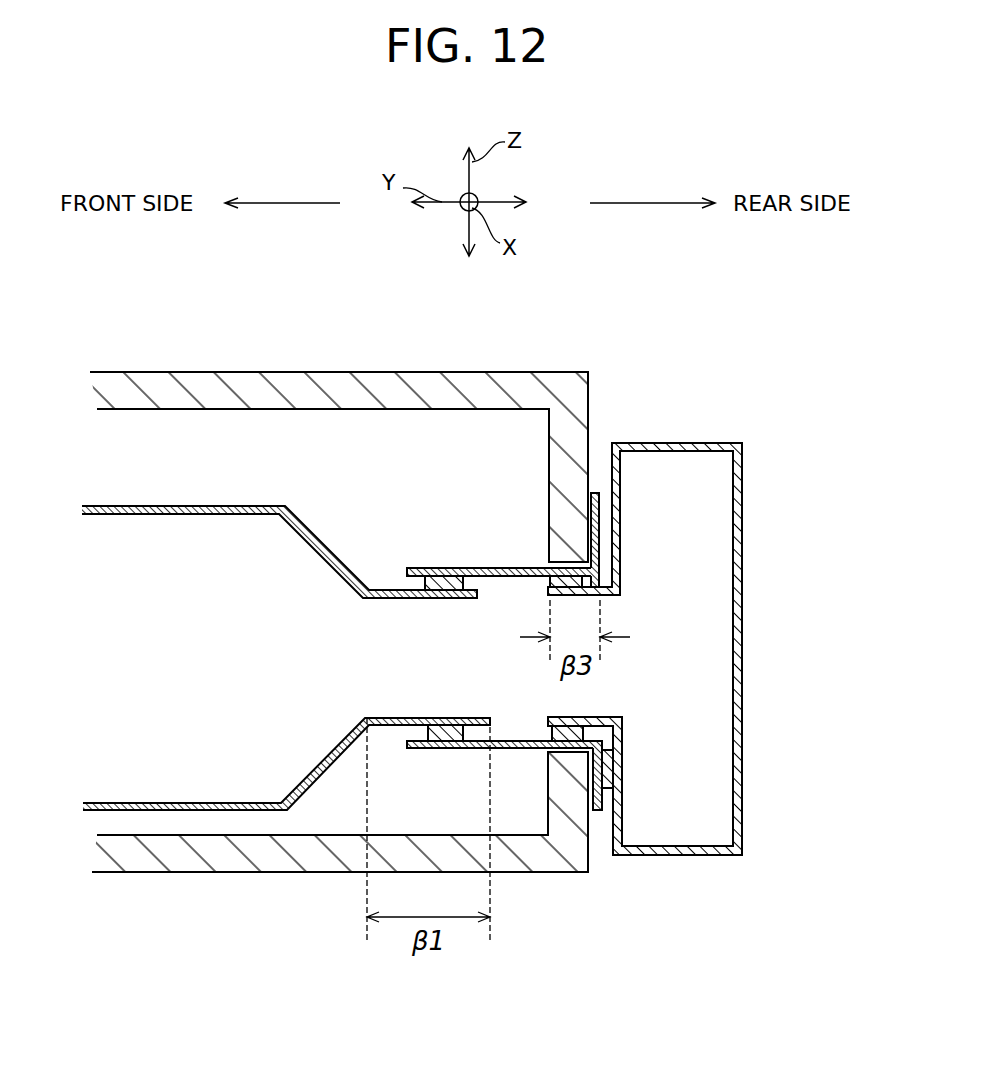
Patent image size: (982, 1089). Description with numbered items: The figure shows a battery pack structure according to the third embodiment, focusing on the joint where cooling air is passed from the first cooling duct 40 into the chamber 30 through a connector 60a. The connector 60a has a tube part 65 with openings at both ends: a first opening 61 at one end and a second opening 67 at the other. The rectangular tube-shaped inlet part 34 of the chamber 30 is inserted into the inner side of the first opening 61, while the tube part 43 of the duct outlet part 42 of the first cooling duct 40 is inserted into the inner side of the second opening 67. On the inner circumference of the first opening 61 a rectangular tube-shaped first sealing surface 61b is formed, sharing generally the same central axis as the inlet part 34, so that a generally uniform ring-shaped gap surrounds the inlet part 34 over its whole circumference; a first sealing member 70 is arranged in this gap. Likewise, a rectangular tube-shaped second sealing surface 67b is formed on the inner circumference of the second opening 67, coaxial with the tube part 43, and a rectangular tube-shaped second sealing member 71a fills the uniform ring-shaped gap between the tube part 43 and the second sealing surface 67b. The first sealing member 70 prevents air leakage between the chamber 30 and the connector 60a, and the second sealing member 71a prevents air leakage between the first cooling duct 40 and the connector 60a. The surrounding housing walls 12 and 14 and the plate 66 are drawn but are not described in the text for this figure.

The housing 12 is at (339, 584).
The upper wall of housing 14 is at (425, 385).
The chamber 30 is at (166, 526).
The inlet part 34 is at (390, 588).
The first cooling duct 40 is at (757, 473).
The duct outlet part 42 is at (612, 600).
The tube part 43 is at (548, 598).
The connector 60a is at (518, 762).
The first opening 61 is at (418, 598).
The first sealing surface 61b is at (458, 726).
The tube part 65 is at (497, 566).
The vertical plate 66 is at (600, 500).
The second opening 67 is at (598, 742).
The second sealing surface 67b is at (598, 598).
The first sealing member 70 is at (440, 750).
The second sealing member 71a is at (588, 838).